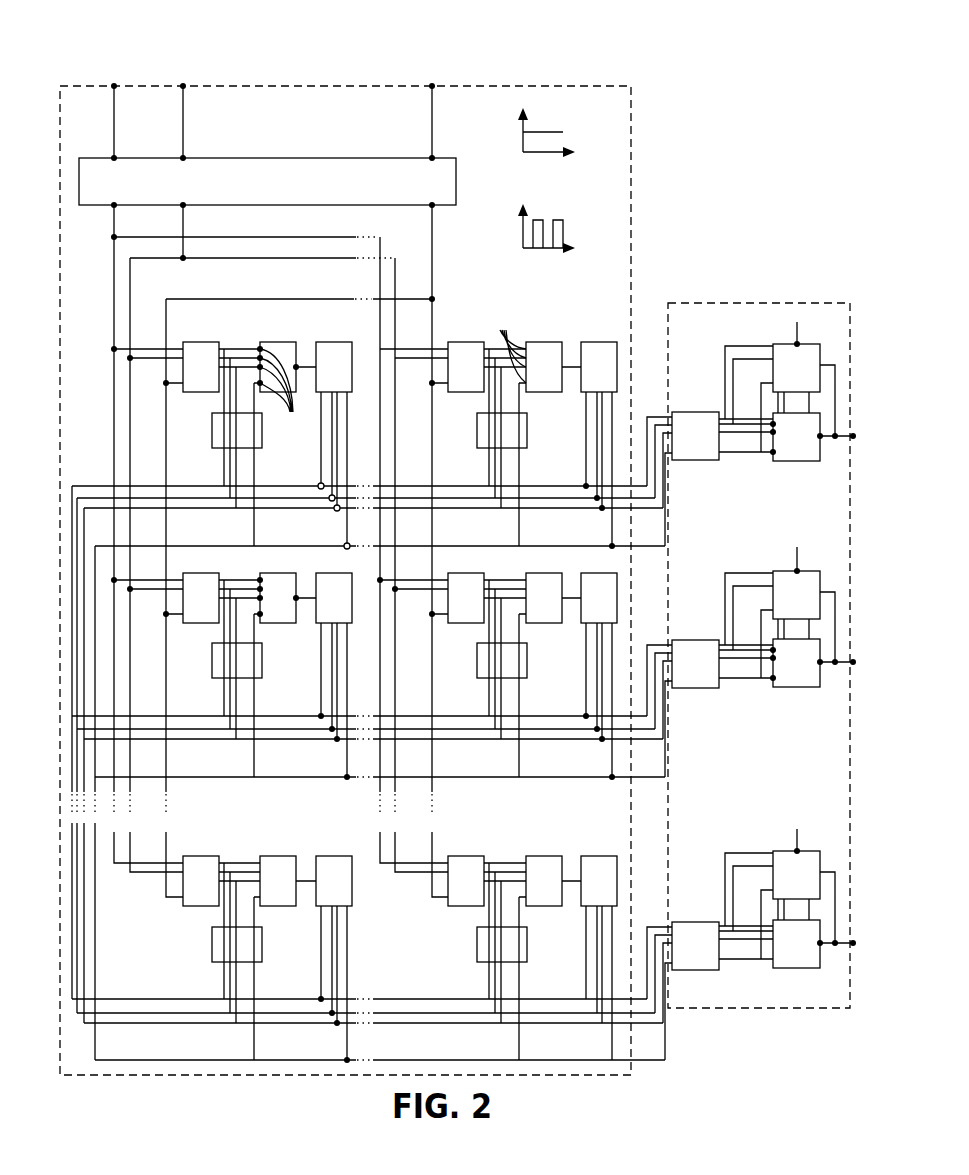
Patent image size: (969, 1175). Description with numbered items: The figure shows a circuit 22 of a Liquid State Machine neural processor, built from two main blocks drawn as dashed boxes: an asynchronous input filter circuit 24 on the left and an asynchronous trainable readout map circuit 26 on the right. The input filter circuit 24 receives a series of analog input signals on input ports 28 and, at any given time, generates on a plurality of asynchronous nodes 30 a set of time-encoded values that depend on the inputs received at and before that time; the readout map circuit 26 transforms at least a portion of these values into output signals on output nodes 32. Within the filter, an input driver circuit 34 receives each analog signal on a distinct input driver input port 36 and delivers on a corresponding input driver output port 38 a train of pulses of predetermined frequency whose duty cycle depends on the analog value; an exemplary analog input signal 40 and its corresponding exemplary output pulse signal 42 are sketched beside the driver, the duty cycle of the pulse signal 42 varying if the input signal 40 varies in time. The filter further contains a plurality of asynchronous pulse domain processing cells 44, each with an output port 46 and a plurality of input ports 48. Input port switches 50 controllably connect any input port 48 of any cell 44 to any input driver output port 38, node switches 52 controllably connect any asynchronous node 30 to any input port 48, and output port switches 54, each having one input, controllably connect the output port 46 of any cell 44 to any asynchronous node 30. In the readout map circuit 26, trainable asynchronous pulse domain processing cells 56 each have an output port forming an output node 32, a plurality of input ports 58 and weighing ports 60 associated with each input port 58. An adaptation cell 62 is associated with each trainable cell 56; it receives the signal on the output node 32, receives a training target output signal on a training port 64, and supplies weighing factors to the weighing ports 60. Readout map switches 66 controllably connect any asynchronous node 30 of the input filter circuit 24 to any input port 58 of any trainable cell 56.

The circuit 22 is at (672, 70).
The asynchronous input filter circuit 24 is at (246, 86).
The asynchronous trainable readout map circuit 26 is at (822, 303).
The input ports 28 is at (114, 84).
The asynchronous nodes 30 is at (667, 540).
The output nodes 32 is at (836, 704).
The input driver circuit 34 is at (90, 205).
The input driver input port 36 is at (114, 158).
The input driver output port 38 is at (114, 205).
The analog input signal 40 is at (564, 117).
The output pulse signal 42 is at (558, 205).
The asynchronous pulse domain processing cell 44 is at (278, 342).
The output port 46 is at (298, 367).
The input ports 48 is at (393, 371).
The input port switch 50 is at (201, 342).
The node switch 52 is at (212, 440).
The output port switch 54 is at (336, 343).
The trainable asynchronous pulse domain processing cell 56 is at (800, 461).
The input ports 58 is at (774, 454).
The weighing ports 60 is at (810, 407).
The adaptation cell 62 is at (815, 344).
The training port 64 is at (796, 340).
The readout map switch 66 is at (695, 412).